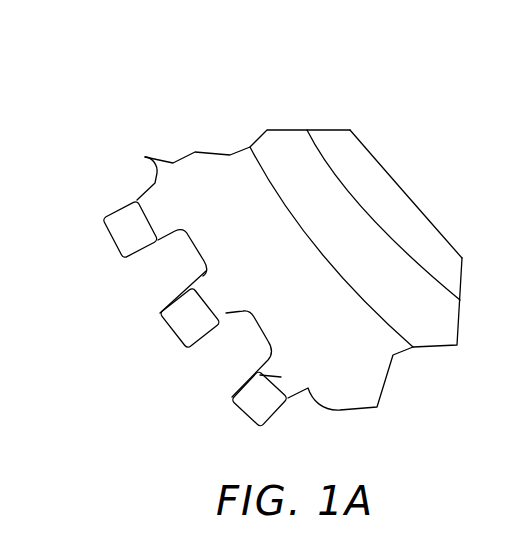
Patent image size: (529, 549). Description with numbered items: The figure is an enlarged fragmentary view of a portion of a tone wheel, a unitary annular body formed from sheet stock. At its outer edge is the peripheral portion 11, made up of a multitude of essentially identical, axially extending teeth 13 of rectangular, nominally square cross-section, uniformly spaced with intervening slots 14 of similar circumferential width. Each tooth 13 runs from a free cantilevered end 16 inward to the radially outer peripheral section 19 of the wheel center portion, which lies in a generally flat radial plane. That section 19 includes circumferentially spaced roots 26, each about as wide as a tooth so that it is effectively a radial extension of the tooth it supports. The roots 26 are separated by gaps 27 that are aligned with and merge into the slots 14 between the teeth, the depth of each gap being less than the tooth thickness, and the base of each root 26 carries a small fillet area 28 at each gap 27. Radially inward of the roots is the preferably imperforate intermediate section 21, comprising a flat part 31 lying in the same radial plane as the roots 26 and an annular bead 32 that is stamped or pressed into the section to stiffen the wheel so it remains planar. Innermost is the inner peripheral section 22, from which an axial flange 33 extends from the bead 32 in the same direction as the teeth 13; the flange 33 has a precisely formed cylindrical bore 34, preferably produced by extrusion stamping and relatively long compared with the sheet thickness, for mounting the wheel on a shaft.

The peripheral portion 11 is at (242, 430).
The teeth 13 is at (108, 241).
The slots 14 is at (152, 272).
The free cantilevered end 16 is at (122, 220).
The radially outer peripheral section 19 is at (160, 208).
The intermediate section 21 is at (210, 180).
The inner peripheral section 22 is at (337, 104).
The roots 26 is at (215, 303).
The gaps 27 is at (188, 252).
The fillet area 28 is at (202, 269).
The flat part 31 is at (230, 174).
The annular bead 32 is at (290, 147).
The axial flange 33 is at (373, 190).
The cylindrical bore 34 is at (363, 147).